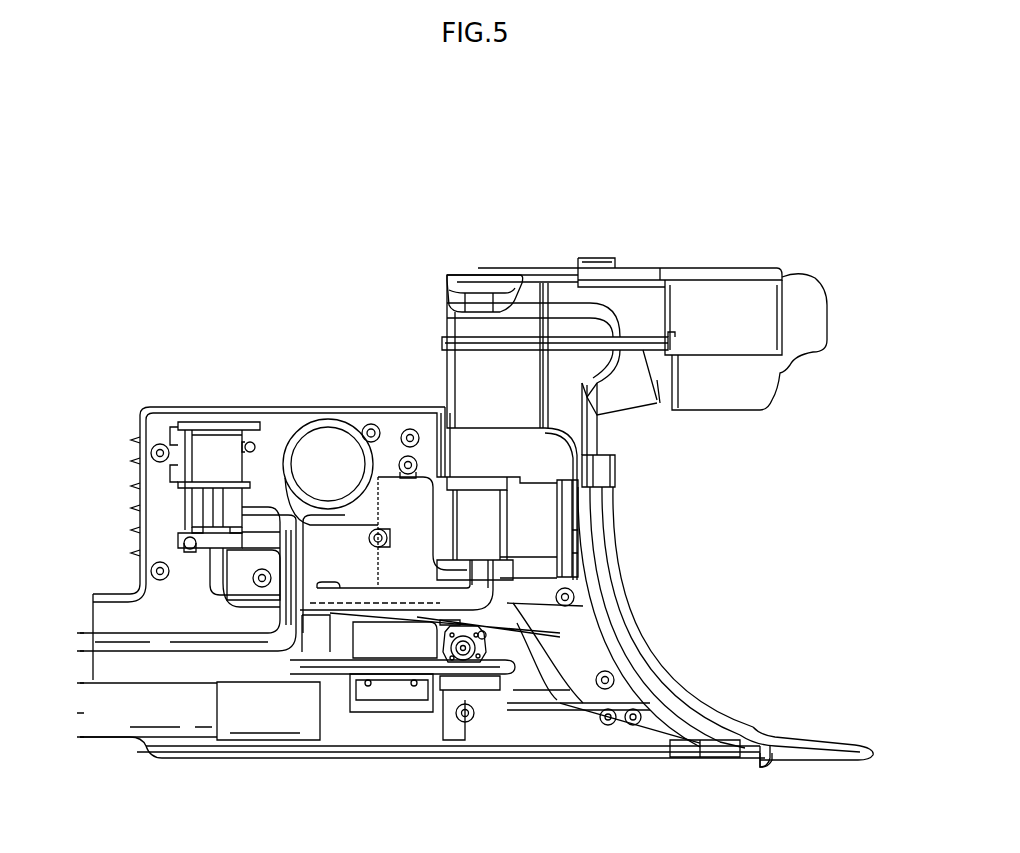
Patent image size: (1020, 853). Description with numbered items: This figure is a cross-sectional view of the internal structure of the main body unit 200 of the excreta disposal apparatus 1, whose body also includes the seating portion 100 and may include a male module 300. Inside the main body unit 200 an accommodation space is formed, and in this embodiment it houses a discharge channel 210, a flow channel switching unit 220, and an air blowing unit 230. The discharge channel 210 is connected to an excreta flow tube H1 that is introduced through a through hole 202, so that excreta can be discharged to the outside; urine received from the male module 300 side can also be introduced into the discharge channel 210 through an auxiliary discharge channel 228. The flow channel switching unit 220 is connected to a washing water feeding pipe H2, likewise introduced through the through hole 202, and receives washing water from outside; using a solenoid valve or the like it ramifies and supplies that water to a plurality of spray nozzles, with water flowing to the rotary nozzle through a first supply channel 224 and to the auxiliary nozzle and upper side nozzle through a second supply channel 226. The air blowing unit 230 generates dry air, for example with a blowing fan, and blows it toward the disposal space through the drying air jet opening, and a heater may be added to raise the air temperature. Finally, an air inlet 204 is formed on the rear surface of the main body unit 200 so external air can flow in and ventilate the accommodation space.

The excreta disposal apparatus 1 is at (203, 298).
The seating portion 100 is at (642, 637).
The main body unit 200 is at (255, 400).
The through hole 202 is at (106, 594).
The air inlet 204 is at (137, 455).
The discharge channel 210 is at (256, 728).
The flow channel switching unit 220 is at (220, 440).
The first supply channel 224 is at (448, 662).
The second supply channel 226 is at (390, 603).
The auxiliary discharge channel 228 is at (320, 655).
The air blowing unit 230 is at (338, 450).
The male module 300 is at (688, 258).
The excreta flow tube H1 is at (118, 722).
The washing water feeding pipe H2 is at (195, 648).